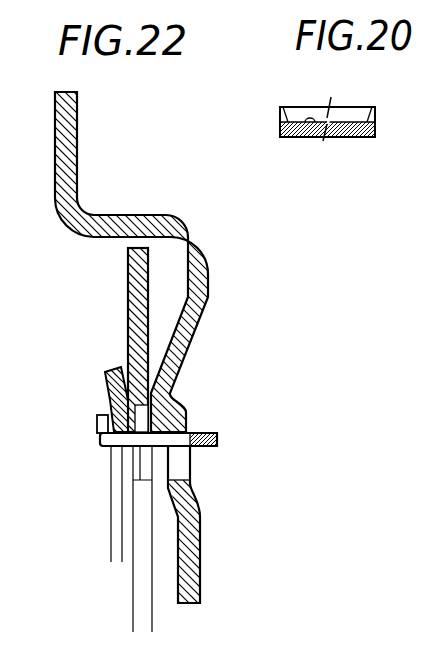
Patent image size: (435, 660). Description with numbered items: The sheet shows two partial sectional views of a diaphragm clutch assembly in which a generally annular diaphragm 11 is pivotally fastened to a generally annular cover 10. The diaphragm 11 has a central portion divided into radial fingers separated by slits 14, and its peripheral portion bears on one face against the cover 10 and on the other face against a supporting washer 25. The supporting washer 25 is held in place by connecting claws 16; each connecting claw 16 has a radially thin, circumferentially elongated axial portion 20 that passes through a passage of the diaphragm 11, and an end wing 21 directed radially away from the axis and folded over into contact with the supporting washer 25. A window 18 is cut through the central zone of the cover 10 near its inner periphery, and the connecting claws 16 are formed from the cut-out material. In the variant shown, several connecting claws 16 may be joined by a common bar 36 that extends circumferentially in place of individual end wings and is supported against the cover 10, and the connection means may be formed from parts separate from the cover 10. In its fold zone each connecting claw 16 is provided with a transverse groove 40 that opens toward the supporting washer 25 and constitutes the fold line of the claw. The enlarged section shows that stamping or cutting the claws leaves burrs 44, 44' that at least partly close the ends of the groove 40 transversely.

In FIG. 22, the cover 10 is at (184, 212).
In FIG. 22, the diaphragm 11 is at (90, 336).
In FIG. 22, the slit 14 is at (128, 305).
In FIG. 22, the connecting claw 16 is at (125, 445).
In FIG. 20, the connecting claw 16 is at (324, 133).
In FIG. 22, the window 18 is at (188, 475).
In FIG. 22, the axial portion 20 is at (149, 436).
In FIG. 20, the axial portion 20 is at (349, 134).
In FIG. 22, the end wing 21 is at (97, 420).
In FIG. 22, the supporting washer 25 is at (105, 373).
In FIG. 22, the common bar 36 is at (212, 432).
In FIG. 22, the transverse groove 40 is at (100, 441).
In FIG. 20, the transverse groove 40 is at (306, 130).
In FIG. 20, the burr 44 is at (263, 96).
In FIG. 20, the burr 44' is at (388, 96).